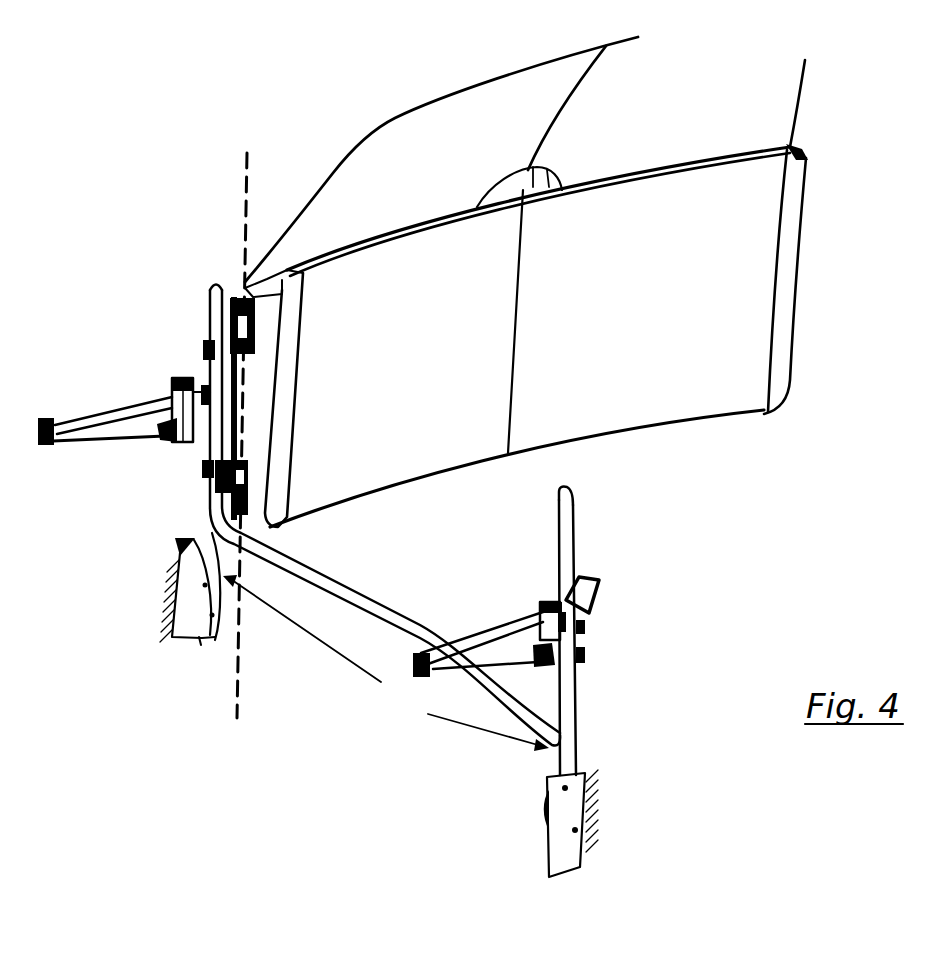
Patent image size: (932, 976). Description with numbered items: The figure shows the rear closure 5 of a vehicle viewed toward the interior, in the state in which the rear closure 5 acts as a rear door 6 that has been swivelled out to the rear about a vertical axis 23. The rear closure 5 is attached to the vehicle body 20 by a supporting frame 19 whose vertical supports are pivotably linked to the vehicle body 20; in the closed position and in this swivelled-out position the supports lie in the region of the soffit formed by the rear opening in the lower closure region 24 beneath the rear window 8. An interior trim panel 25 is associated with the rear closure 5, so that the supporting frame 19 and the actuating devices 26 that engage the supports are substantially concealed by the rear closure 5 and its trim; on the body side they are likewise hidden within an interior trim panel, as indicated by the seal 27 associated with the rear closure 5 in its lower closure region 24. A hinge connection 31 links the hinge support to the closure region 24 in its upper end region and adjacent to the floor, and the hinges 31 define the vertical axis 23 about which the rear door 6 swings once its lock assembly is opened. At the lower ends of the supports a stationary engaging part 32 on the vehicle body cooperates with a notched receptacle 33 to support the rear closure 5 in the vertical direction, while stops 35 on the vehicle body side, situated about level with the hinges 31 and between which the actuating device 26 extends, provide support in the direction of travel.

The rear closure 5 is at (834, 245).
The rear door 6 is at (716, 407).
The rear window 8 is at (516, 88).
The supporting frame 19 is at (386, 663).
The vehicle body 20 is at (183, 570).
The vertical axis 23 is at (248, 156).
The lower closure region 24 is at (760, 330).
The interior trim panel 25 is at (383, 304).
The actuating device 26 is at (98, 404).
The seal 27 is at (311, 565).
The hinge connection 31 is at (220, 328).
The stationary engaging part 32 is at (203, 638).
The notched receptacle 33 is at (379, 708).
The stops 35 is at (211, 360).